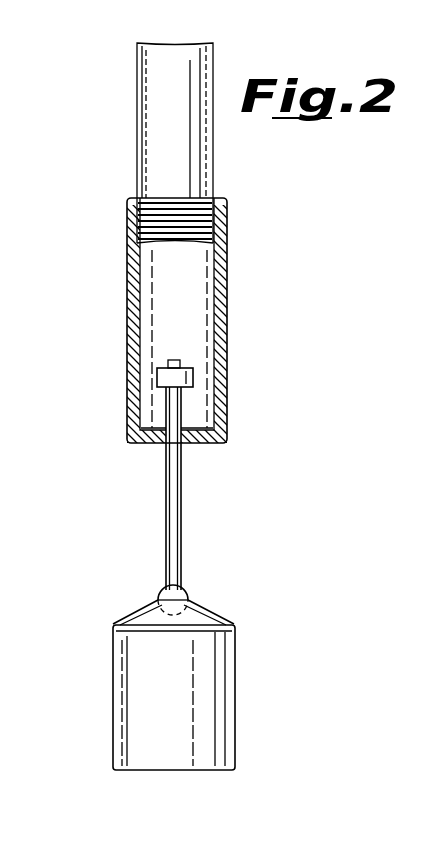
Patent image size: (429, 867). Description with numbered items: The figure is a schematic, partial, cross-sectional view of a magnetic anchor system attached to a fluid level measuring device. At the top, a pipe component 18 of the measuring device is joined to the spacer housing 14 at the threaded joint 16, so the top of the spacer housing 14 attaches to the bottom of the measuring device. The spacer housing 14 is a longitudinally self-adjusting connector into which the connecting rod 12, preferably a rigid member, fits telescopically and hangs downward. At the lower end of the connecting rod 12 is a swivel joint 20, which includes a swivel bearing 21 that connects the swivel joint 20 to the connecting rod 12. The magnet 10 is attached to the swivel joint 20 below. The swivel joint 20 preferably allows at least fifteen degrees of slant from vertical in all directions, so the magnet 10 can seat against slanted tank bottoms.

The magnet 10 is at (123, 713).
The connecting rod 12 is at (181, 503).
The spacer housing 14 is at (224, 307).
The joint 16 is at (224, 228).
The pipe component 18 is at (202, 160).
The swivel joint 20 is at (203, 608).
The swivel bearing 21 is at (186, 592).